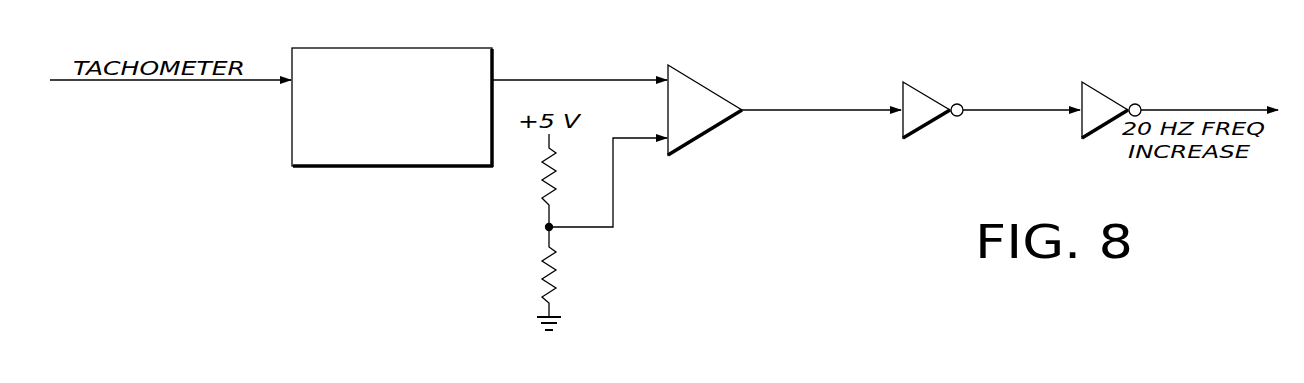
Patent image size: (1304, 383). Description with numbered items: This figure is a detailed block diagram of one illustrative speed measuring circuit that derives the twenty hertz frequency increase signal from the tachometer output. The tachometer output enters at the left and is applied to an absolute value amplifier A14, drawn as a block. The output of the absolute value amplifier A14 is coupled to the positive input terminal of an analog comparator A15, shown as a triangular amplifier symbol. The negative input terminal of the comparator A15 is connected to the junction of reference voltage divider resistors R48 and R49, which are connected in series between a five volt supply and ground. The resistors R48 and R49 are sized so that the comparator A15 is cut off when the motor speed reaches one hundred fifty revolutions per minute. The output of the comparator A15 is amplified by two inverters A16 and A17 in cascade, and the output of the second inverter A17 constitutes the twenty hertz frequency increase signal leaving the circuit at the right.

The absolute value amplifier A14 is at (435, 48).
The analog comparator A15 is at (705, 110).
The inverter A16 is at (924, 94).
The inverter A17 is at (1100, 93).
The reference voltage divider resistor R48 is at (545, 182).
The reference voltage divider resistor R49 is at (540, 266).